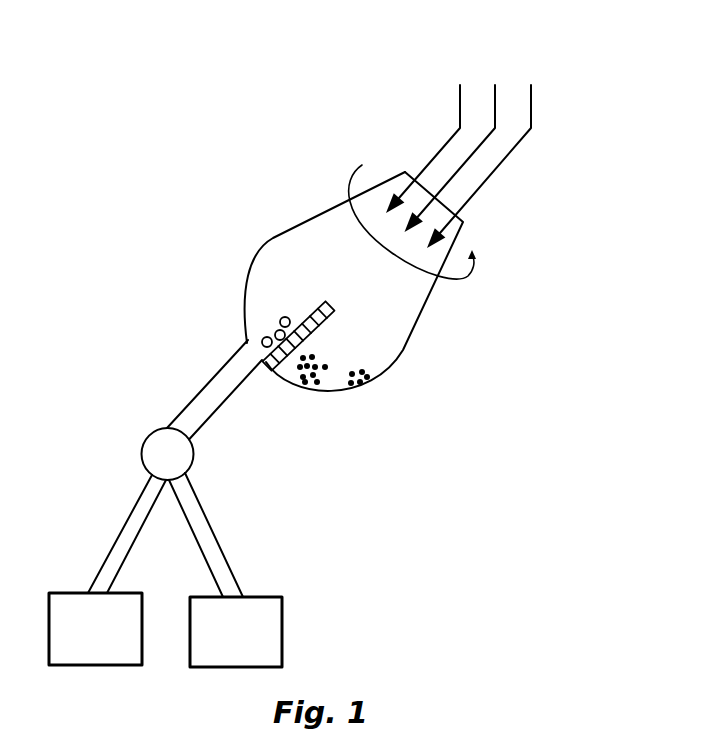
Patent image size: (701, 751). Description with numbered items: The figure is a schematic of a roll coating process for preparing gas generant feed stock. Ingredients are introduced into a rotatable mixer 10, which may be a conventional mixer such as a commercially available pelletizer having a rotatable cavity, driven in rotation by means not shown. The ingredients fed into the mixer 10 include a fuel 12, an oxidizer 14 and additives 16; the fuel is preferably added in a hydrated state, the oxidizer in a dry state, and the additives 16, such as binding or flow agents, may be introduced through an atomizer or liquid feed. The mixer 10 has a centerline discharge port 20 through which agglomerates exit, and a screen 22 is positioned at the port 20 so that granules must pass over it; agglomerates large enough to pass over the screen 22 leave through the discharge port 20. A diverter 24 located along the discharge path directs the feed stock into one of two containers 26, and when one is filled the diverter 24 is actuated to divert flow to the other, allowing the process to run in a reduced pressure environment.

The rotatable mixer 10 is at (408, 345).
The fuel 12 is at (533, 102).
The oxidizer 14 is at (495, 100).
The additives 16 is at (460, 110).
The centerline discharge port 20 is at (253, 352).
The screen 22 is at (285, 371).
The diverter 24 is at (147, 452).
The containers 26 is at (82, 644).